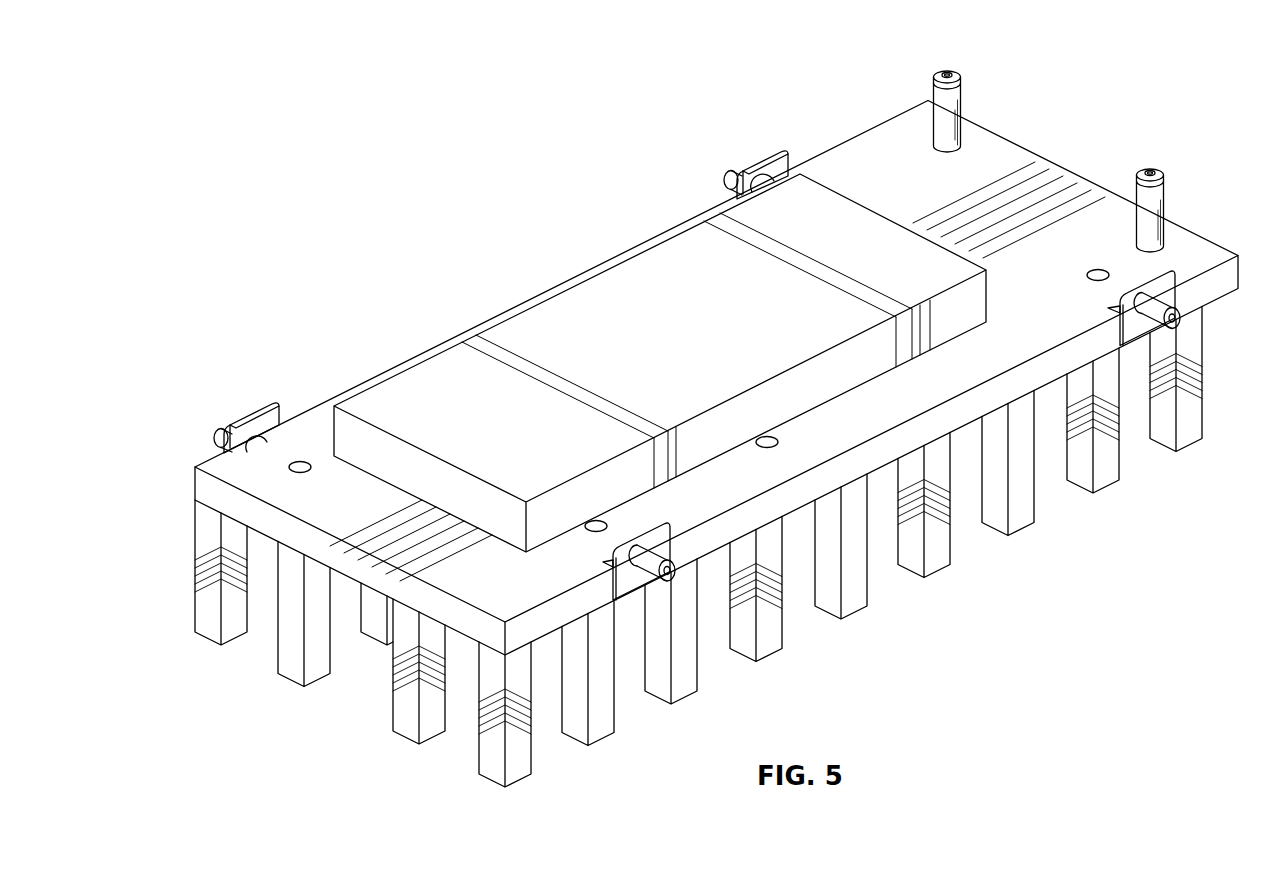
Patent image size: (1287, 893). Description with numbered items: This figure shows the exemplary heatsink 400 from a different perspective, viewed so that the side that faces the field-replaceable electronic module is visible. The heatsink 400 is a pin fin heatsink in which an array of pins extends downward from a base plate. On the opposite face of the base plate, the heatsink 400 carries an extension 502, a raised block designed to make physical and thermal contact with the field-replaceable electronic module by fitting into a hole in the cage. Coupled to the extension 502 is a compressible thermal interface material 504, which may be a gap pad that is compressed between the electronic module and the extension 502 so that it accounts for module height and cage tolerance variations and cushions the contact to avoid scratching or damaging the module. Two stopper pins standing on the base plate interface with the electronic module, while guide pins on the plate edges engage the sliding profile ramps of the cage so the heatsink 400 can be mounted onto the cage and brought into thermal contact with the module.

The heatsink 400 is at (238, 128).
The extension 502 is at (345, 452).
The compressible thermal interface material 504 is at (624, 352).